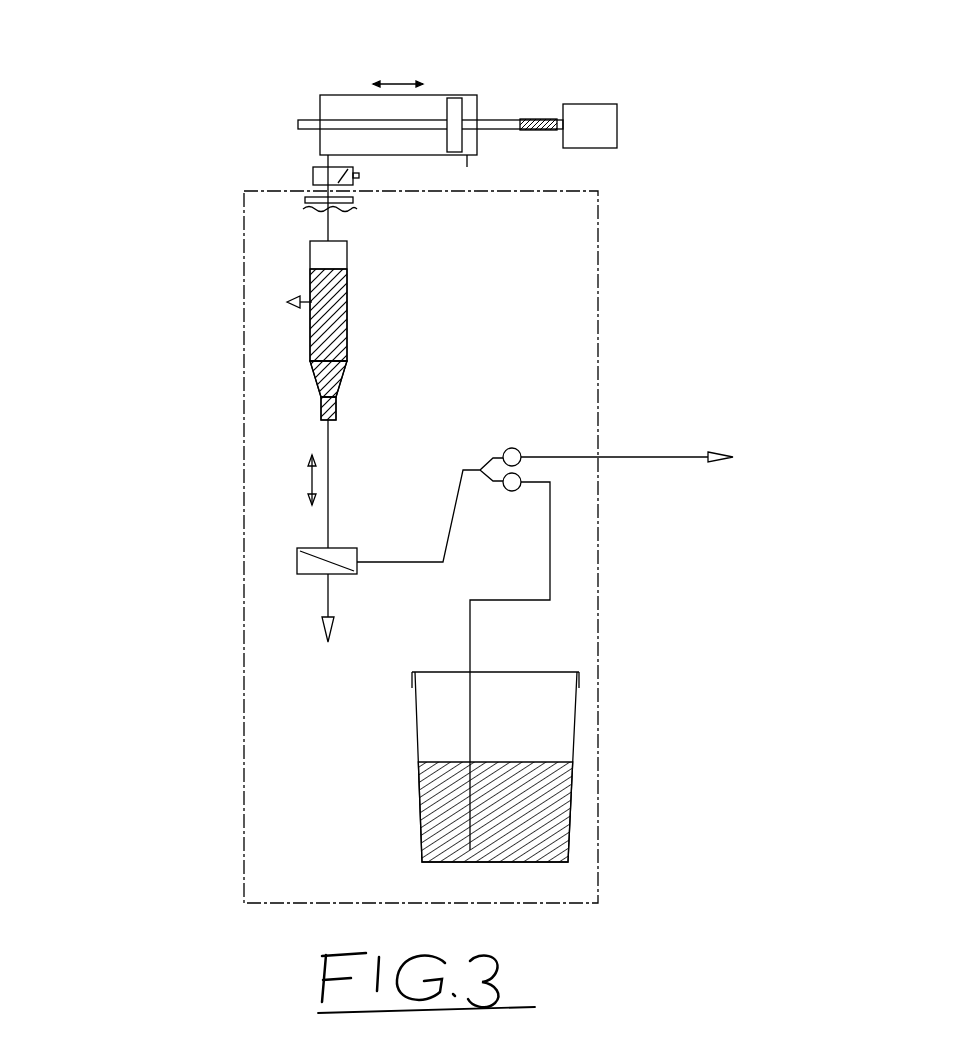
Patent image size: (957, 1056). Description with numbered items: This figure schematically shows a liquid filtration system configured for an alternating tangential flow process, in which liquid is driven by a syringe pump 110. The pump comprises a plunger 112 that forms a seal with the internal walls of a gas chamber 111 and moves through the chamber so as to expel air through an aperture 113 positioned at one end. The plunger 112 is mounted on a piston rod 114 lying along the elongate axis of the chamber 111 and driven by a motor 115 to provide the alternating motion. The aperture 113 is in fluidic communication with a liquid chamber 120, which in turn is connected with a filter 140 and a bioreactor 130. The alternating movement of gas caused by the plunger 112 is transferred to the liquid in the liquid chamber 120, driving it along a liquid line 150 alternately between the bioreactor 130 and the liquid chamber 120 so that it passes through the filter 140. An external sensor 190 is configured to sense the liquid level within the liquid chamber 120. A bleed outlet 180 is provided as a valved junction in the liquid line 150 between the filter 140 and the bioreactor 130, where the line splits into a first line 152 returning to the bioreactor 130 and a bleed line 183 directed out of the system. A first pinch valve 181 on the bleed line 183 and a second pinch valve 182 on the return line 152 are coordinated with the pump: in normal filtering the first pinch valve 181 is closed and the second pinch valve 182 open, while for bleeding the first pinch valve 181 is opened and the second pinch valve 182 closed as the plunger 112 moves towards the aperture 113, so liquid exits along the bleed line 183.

The syringe pump 110 is at (488, 85).
The gas chamber 111 is at (327, 103).
The plunger 112 is at (452, 108).
The aperture 113 is at (327, 155).
The piston rod 114 is at (298, 122).
The motor 115 is at (618, 127).
The liquid chamber 120 is at (357, 285).
The sensor 190 is at (345, 312).
The bioreactor 130 is at (397, 802).
The filter 140 is at (285, 572).
The liquid line 150 is at (470, 647).
The first line 152 is at (552, 562).
The bleed outlet 180 is at (490, 443).
The first pinch valve 181 is at (525, 447).
The second pinch valve 182 is at (513, 492).
The bleed line 183 is at (638, 462).